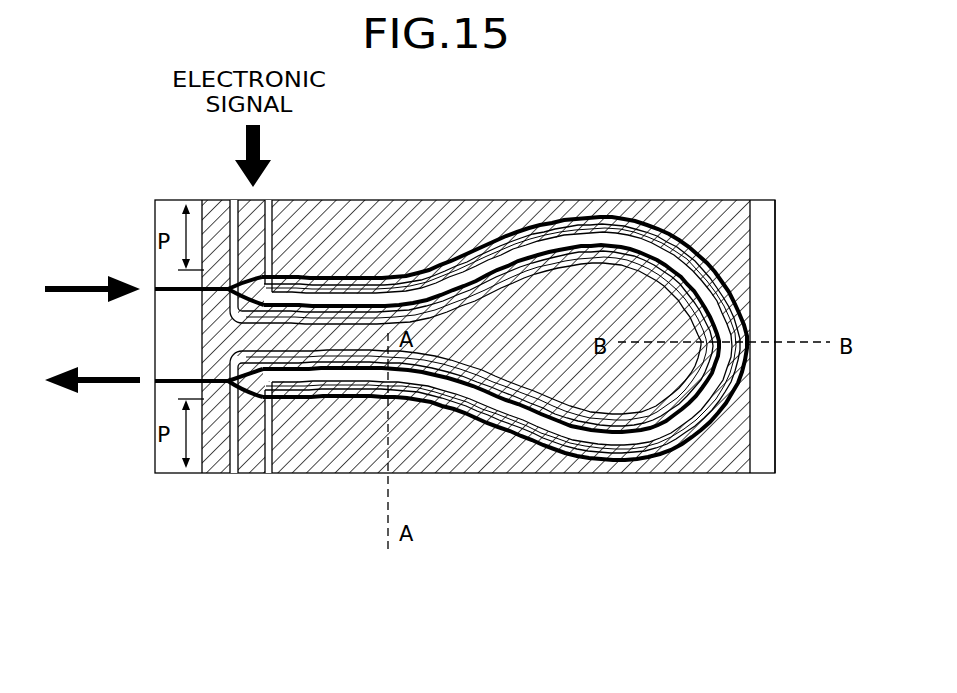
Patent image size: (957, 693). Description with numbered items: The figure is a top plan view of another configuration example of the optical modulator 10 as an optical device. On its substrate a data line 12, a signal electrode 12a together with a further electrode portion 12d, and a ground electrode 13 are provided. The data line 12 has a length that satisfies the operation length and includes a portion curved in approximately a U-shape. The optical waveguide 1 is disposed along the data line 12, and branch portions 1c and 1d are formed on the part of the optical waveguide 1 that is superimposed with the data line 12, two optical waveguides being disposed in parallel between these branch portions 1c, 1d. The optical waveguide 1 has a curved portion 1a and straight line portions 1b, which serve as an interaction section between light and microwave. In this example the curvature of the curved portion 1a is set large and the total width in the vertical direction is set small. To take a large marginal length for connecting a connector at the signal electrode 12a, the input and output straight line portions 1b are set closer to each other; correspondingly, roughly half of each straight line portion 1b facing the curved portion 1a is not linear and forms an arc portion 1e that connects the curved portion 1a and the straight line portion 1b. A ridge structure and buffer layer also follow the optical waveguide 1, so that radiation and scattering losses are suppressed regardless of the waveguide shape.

The optical modulator 10 is at (550, 178).
The optical waveguide 1 is at (708, 236).
The curved portion 1a is at (752, 284).
The straight line portion 1b is at (330, 373).
The branch portion 1c is at (236, 313).
The branch portion 1d is at (236, 359).
The arc portion 1e is at (464, 286).
The data line 12 is at (626, 440).
The signal electrode 12a is at (272, 214).
The signal electrode terminal portion 12d is at (245, 475).
The ground electrode 13 is at (690, 387).